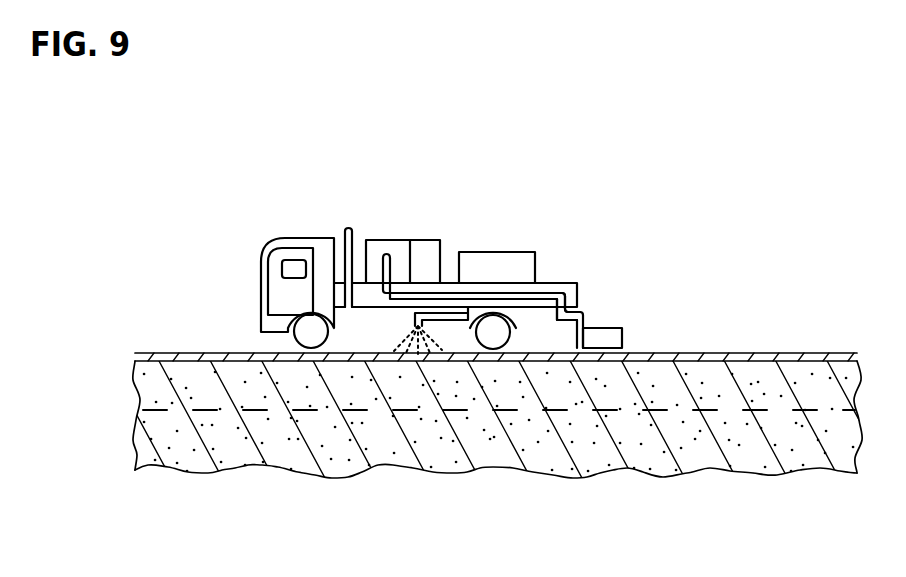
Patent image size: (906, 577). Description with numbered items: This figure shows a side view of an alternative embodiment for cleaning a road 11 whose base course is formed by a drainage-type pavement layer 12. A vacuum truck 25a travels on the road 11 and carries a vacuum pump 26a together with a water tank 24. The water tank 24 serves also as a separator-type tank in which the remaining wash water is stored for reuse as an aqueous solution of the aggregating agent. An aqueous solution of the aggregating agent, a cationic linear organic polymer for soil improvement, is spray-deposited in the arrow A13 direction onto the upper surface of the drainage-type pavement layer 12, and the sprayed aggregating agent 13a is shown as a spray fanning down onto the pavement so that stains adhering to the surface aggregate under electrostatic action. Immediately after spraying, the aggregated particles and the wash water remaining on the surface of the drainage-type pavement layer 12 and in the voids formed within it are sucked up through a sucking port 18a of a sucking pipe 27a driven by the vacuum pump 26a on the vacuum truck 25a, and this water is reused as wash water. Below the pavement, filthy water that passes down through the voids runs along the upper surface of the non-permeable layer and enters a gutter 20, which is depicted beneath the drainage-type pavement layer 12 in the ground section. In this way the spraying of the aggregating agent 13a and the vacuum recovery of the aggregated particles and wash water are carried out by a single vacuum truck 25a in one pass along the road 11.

The road 11 is at (803, 351).
The drainage-type pavement layer 12 is at (700, 364).
The gutter 20 is at (258, 412).
The vacuum truck 25a is at (293, 232).
The vacuum pump 26a is at (387, 246).
The water tank 24 is at (473, 248).
The spray direction of aggregating agent A13 is at (472, 300).
The sucking pipe 27a is at (547, 295).
The sucking port 18a is at (623, 352).
The spray nozzle 13a is at (452, 360).